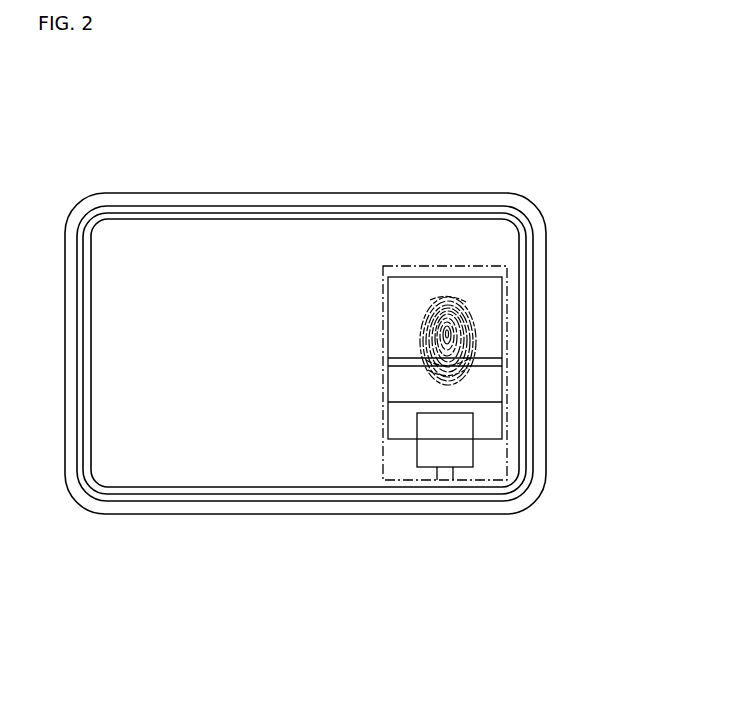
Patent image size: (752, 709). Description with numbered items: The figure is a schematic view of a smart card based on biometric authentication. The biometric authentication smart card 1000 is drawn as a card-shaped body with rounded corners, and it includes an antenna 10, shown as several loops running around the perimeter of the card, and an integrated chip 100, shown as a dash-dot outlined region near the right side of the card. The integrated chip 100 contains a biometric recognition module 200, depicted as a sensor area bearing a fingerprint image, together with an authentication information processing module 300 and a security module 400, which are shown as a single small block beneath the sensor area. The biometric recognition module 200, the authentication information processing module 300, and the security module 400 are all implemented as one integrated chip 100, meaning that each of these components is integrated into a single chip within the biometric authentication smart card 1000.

The biometric authentication smart card 1000 is at (572, 130).
The antenna 10 is at (252, 206).
The integrated chip 100 is at (477, 268).
The biometric recognition module 200 is at (502, 324).
The authentication information processing module 300 is at (407, 485).
The security module 400 is at (417, 455).